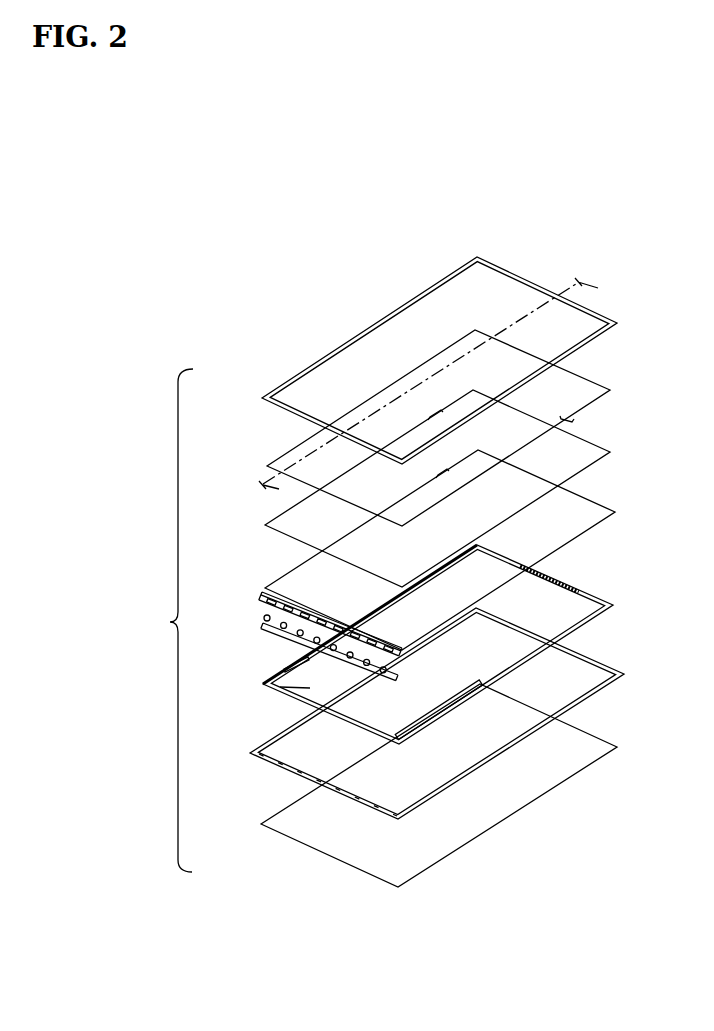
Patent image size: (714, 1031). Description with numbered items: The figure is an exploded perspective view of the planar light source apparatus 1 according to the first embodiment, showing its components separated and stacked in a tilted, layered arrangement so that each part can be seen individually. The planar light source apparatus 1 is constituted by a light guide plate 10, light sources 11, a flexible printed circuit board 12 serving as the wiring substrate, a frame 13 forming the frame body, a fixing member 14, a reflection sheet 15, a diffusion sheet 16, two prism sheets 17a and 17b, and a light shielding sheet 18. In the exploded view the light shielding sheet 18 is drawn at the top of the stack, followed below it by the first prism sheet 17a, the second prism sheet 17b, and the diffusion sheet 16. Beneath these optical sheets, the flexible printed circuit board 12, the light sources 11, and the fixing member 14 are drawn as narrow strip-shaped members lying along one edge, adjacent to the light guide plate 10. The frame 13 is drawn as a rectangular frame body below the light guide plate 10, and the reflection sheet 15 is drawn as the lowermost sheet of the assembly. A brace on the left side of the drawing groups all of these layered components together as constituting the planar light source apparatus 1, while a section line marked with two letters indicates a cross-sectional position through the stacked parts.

The planar light source apparatus 1 is at (175, 620).
The light shielding sheet 18 is at (262, 399).
The prism sheet 17a is at (273, 459).
The prism sheet 17b is at (285, 514).
The diffusion sheet 16 is at (273, 583).
The flexible printed circuit board (wiring substrate) 12 is at (262, 591).
The light sources 11 is at (260, 600).
The fixing member 14 is at (263, 621).
The light guide plate 10 is at (265, 687).
The frame (frame body) 13 is at (293, 720).
The reflection sheet 15 is at (261, 825).